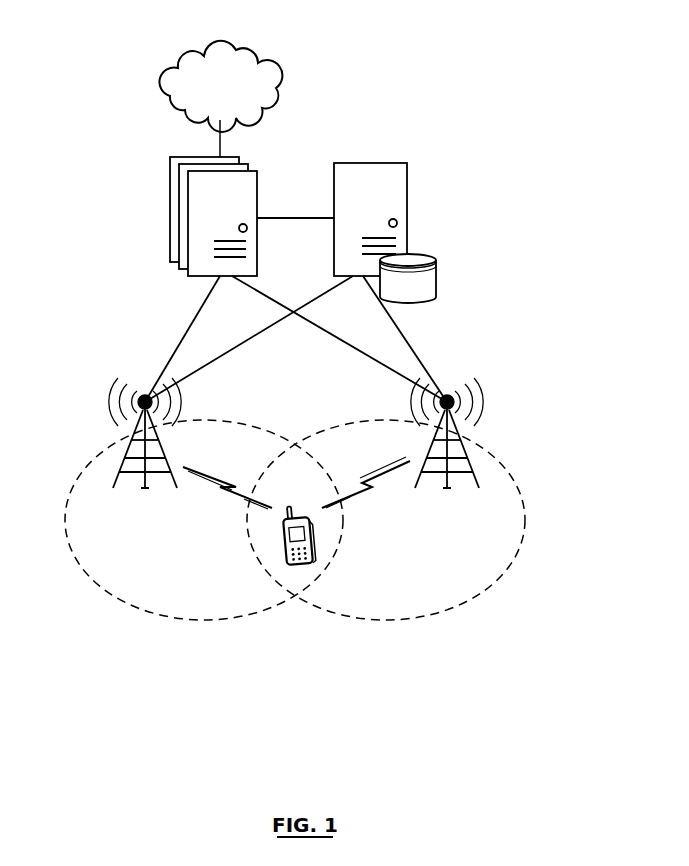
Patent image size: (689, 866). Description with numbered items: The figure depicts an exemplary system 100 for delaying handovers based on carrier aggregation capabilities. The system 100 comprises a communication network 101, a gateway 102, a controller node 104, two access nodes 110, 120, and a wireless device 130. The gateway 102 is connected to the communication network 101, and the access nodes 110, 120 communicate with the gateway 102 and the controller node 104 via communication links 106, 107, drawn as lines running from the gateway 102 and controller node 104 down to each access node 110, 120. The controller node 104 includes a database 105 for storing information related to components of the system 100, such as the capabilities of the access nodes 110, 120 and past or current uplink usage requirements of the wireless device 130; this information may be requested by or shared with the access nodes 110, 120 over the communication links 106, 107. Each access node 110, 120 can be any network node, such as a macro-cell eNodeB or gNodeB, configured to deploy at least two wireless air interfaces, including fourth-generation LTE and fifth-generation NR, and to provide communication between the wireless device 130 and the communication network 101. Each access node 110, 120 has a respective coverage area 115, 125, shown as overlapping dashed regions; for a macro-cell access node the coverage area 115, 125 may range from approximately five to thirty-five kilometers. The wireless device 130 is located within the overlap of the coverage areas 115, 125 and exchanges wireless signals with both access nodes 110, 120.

The system 100 is at (347, 63).
The communication network 101 is at (204, 95).
The gateway 102 is at (170, 192).
The controller node 104 is at (413, 203).
The database 105 is at (440, 270).
The communication link 106 is at (277, 303).
The communication link 107 is at (248, 342).
The access node 110 is at (127, 465).
The coverage area 115 is at (137, 607).
The access node 120 is at (467, 465).
The coverage area 125 is at (462, 607).
The wireless device 130 is at (287, 555).